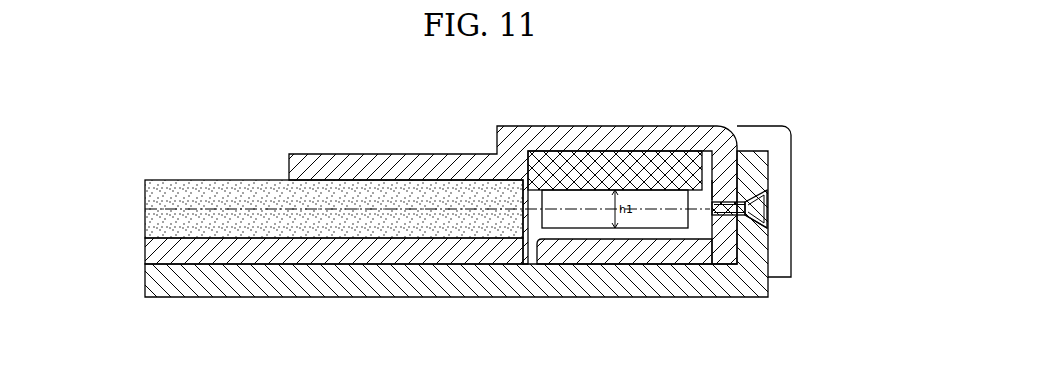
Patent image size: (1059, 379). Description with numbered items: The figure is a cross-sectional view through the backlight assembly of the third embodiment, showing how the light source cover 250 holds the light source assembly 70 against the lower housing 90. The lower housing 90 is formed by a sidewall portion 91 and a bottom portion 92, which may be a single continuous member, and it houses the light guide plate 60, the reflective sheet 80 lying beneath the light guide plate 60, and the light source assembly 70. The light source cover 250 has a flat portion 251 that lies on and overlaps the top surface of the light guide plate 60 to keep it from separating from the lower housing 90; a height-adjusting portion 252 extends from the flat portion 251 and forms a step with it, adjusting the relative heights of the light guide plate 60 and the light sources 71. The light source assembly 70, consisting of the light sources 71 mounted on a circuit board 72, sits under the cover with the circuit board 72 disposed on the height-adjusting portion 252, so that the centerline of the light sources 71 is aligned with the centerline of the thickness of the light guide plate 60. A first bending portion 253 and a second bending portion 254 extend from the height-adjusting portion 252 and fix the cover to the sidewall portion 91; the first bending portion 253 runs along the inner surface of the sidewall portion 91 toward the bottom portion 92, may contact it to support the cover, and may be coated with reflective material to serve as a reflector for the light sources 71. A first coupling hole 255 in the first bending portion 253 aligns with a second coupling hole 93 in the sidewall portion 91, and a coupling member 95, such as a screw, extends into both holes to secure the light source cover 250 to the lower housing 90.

The light guide plate 60 is at (148, 220).
The reflective sheet 80 is at (147, 252).
The light source cover 250 is at (528, 165).
The flat portion 251 is at (473, 157).
The height-adjusting portion 252 is at (621, 137).
The first bending portion 253 is at (717, 158).
The second bending portion 254 is at (767, 139).
The first coupling hole 255 is at (746, 226).
The light source assembly 70 is at (689, 169).
The light source 71 is at (722, 188).
The circuit board 72 is at (703, 164).
The second coupling hole 93 is at (766, 190).
The coupling member 95 is at (768, 209).
The lower housing 90 is at (504, 225).
The sidewall portion 91 is at (752, 251).
The bottom portion 92 is at (765, 293).